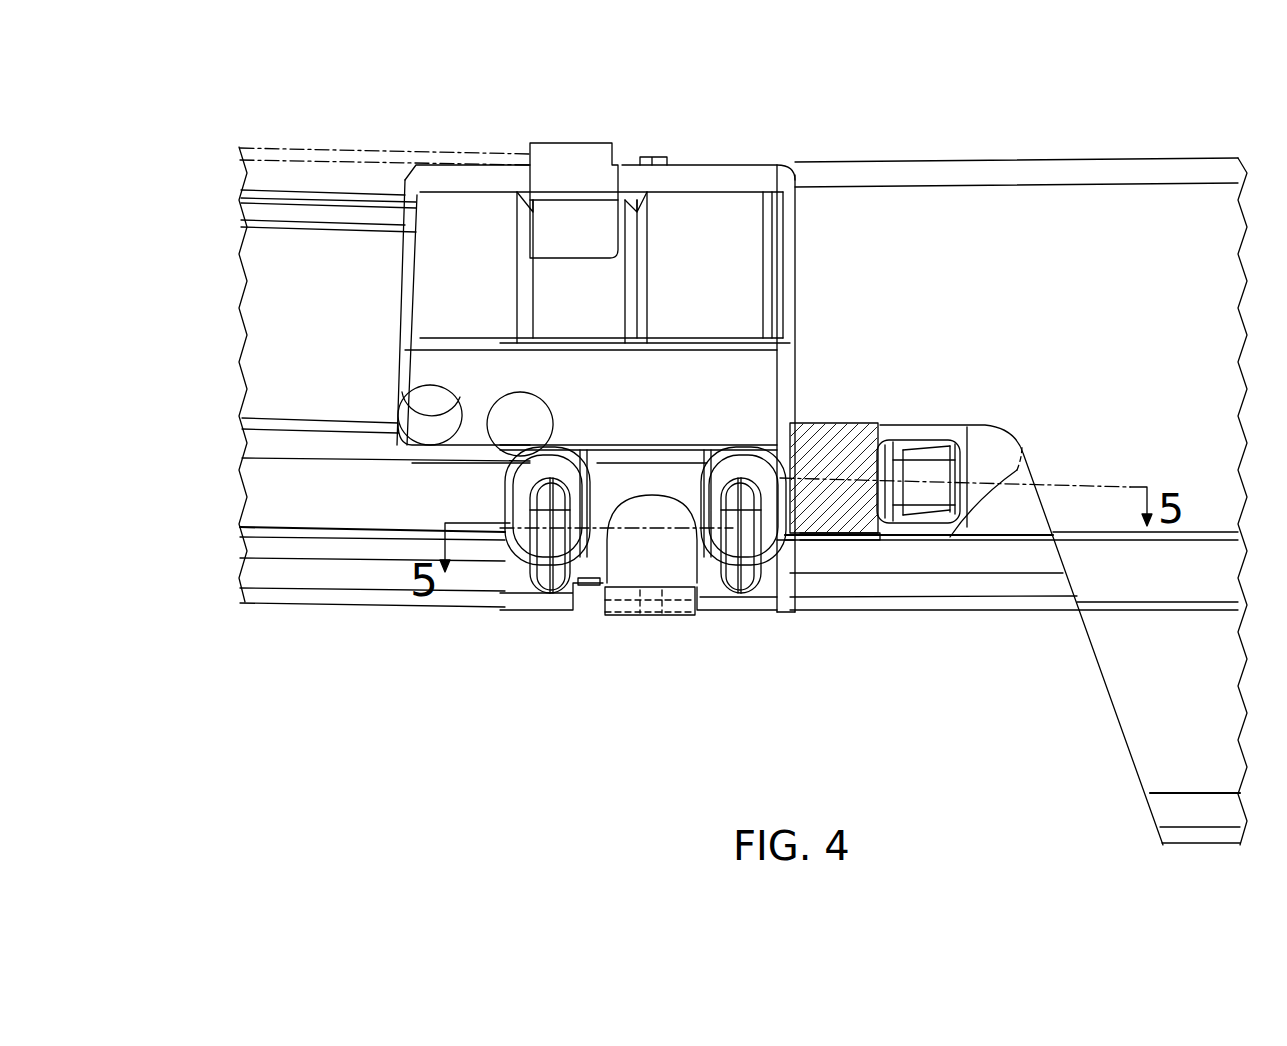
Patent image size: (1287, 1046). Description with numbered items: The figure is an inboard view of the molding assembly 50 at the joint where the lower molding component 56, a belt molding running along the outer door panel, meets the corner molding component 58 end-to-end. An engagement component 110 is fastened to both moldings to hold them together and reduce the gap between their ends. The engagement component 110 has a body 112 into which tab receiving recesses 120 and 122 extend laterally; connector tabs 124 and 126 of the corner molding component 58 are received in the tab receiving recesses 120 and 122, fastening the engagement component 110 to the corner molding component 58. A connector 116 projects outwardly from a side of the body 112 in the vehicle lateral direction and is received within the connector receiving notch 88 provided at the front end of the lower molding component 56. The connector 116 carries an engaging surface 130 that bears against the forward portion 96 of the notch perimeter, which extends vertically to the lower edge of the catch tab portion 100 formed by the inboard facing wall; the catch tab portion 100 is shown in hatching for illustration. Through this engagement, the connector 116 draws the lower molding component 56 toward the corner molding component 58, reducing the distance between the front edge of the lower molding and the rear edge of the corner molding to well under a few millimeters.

The molding assembly 50 is at (893, 101).
The lower molding component 56 is at (1122, 152).
The corner molding component 58 is at (708, 148).
The connector receiving notch 88 is at (996, 455).
The forward portion 96 is at (880, 533).
The catch tab portion 100 is at (810, 547).
The engagement component 110 is at (327, 562).
The body 112 is at (260, 492).
The connector 116 is at (937, 472).
The tab receiving recess 120 is at (548, 300).
The tab receiving recess 122 is at (653, 480).
The connector tab 124 is at (547, 237).
The connector tab 126 is at (647, 568).
The engaging surface 130 is at (880, 472).